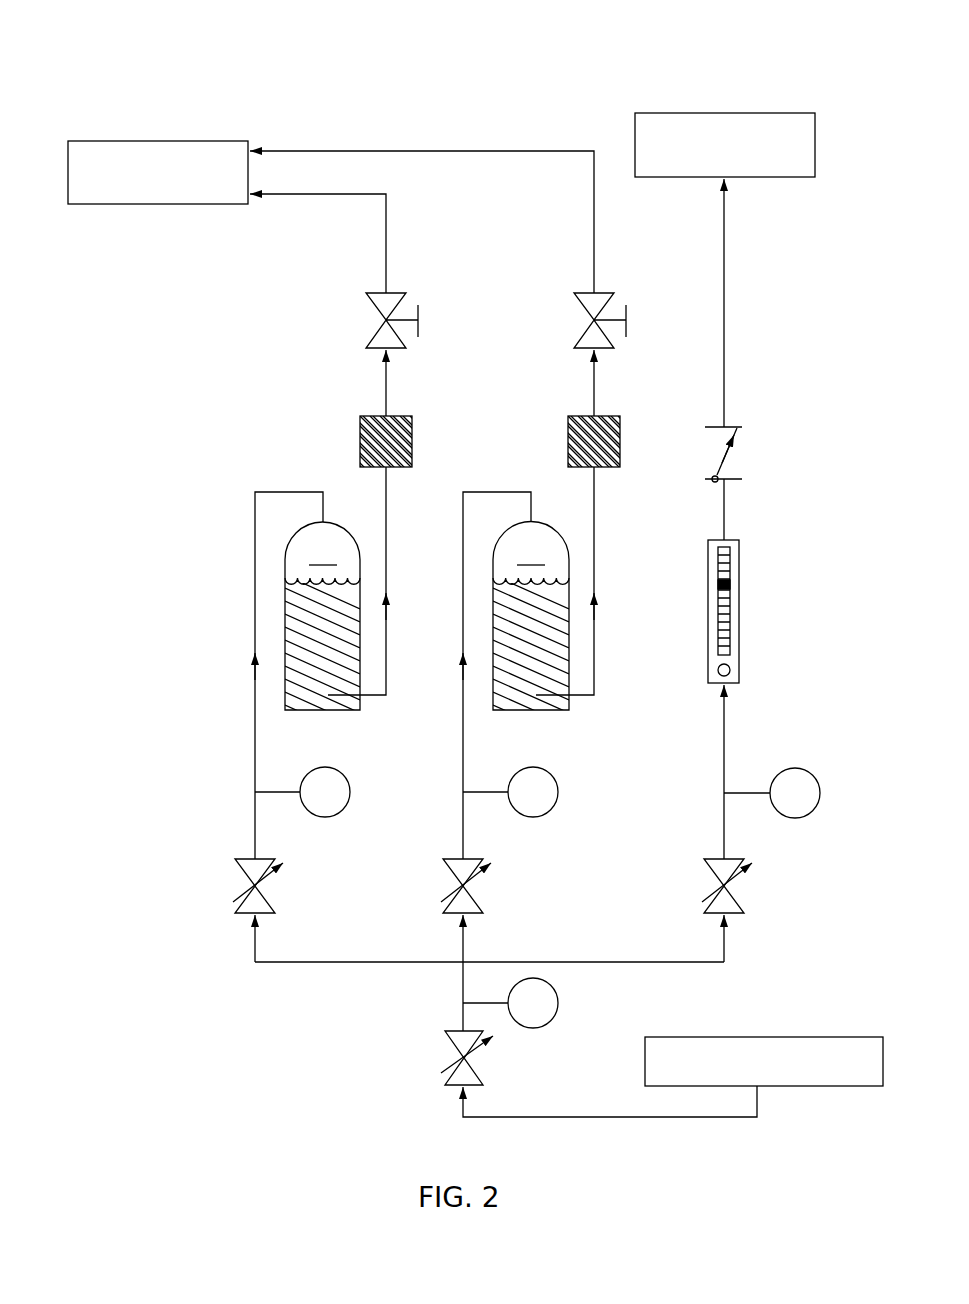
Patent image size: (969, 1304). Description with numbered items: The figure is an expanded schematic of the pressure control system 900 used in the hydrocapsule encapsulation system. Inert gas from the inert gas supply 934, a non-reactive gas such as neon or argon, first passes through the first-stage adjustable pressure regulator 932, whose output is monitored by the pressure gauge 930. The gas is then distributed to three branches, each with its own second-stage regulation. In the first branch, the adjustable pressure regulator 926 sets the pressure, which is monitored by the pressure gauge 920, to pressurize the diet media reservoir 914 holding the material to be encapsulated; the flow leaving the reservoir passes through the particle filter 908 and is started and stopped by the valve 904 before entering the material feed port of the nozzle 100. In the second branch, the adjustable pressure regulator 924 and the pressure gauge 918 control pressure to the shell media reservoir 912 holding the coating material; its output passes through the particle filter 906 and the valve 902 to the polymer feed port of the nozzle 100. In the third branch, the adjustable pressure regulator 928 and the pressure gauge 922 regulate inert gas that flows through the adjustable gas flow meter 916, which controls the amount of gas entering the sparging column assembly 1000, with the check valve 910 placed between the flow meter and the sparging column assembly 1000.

The pressure control system 900 is at (345, 70).
The nozzle 100 is at (150, 141).
The sparging column assembly 1000 is at (720, 113).
The valve 902 is at (375, 293).
The valve 904 is at (583, 293).
The particle filter 906 is at (372, 416).
The particle filter 908 is at (580, 416).
The check valve 910 is at (722, 427).
The shell media reservoir 912 is at (322, 630).
The diet media reservoir 914 is at (531, 631).
The adjustable gas flow meter 916 is at (740, 553).
The pressure gauge 918 is at (346, 775).
The pressure gauge 920 is at (554, 775).
The pressure gauge 922 is at (794, 768).
The adjustable pressure regulator 924 is at (240, 858).
The adjustable pressure regulator 926 is at (450, 858).
The adjustable pressure regulator 928 is at (710, 858).
The pressure gauge 930 is at (553, 1022).
The adjustable pressure regulator 932 is at (450, 1031).
The inert gas supply 934 is at (787, 1037).